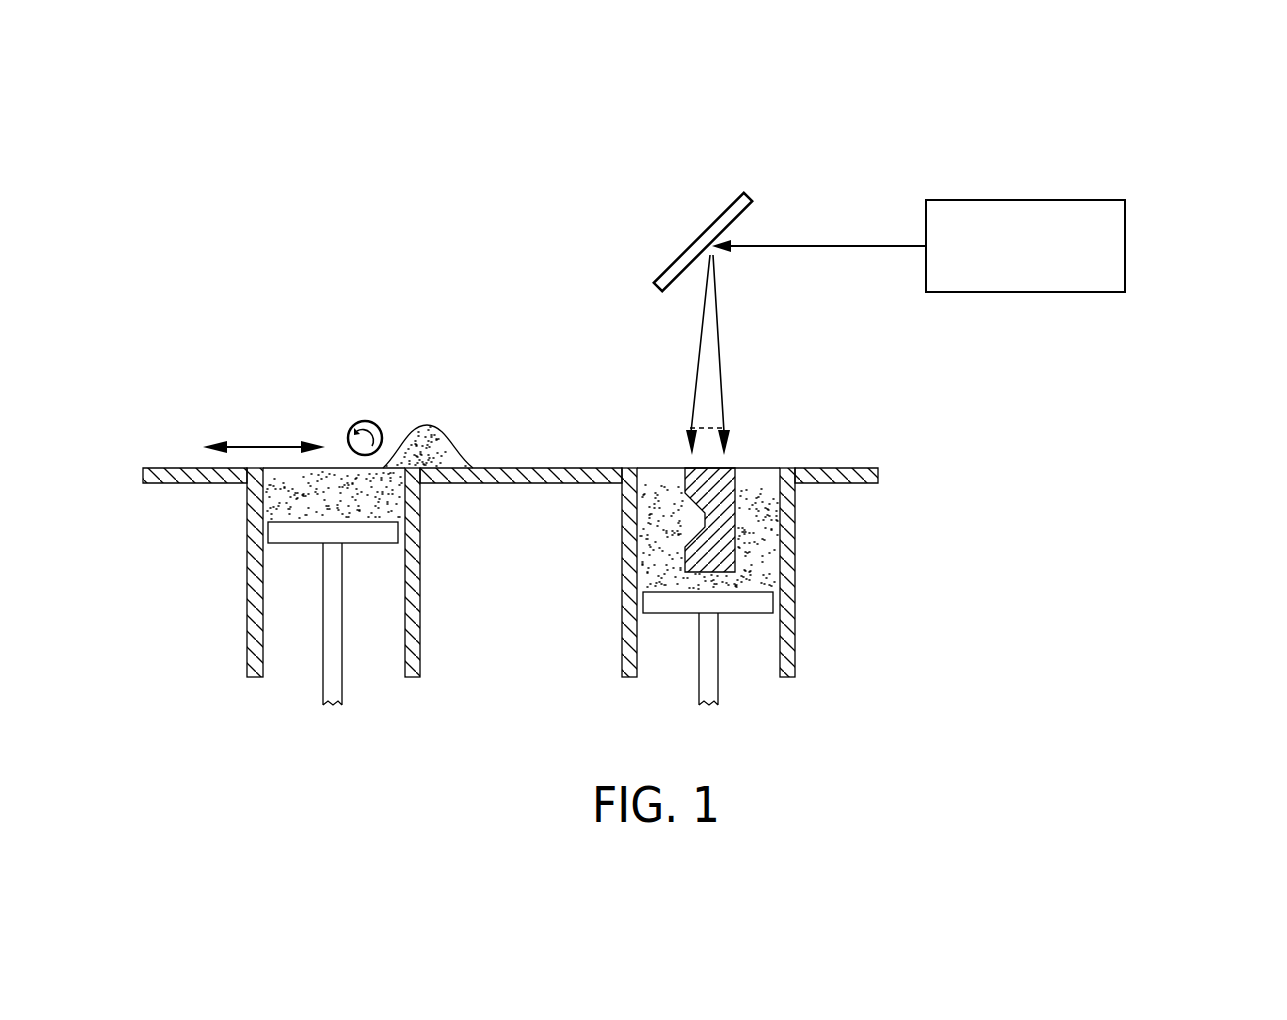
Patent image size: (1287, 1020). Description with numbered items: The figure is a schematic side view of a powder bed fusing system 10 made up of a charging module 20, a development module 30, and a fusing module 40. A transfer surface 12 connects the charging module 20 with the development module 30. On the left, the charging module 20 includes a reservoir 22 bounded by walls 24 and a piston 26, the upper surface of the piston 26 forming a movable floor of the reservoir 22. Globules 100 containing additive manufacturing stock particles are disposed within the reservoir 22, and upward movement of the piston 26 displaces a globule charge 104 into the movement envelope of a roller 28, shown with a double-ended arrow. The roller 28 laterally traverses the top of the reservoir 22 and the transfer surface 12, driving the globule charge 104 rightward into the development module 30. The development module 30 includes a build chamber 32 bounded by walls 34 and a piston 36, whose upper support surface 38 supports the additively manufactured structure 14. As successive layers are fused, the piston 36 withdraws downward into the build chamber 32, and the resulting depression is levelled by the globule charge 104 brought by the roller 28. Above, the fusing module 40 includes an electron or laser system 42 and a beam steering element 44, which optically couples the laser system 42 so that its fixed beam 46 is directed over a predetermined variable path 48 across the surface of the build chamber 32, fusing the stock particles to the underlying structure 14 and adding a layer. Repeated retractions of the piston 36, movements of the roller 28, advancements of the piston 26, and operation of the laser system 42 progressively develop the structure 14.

The powder bed fusing system 10 is at (291, 717).
The transfer surface 12 is at (538, 467).
The structure 14 is at (713, 523).
The charging module 20 is at (315, 603).
The reservoir 22 is at (336, 507).
The walls 24 is at (405, 505).
The piston 26 is at (333, 680).
The roller 28 is at (363, 424).
The development module 30 is at (755, 599).
The build chamber 32 is at (743, 512).
The walls 34 is at (767, 553).
The piston 36 is at (710, 682).
The upper support surface 38 is at (663, 592).
The fusing module 40 is at (921, 267).
The electron or laser system 42 is at (1125, 245).
The beam steering element 44 is at (707, 237).
The fixed beam 46 is at (823, 247).
The predetermined variable path 48 is at (707, 383).
The globules 100 is at (282, 500).
The globule charge 104 is at (427, 420).